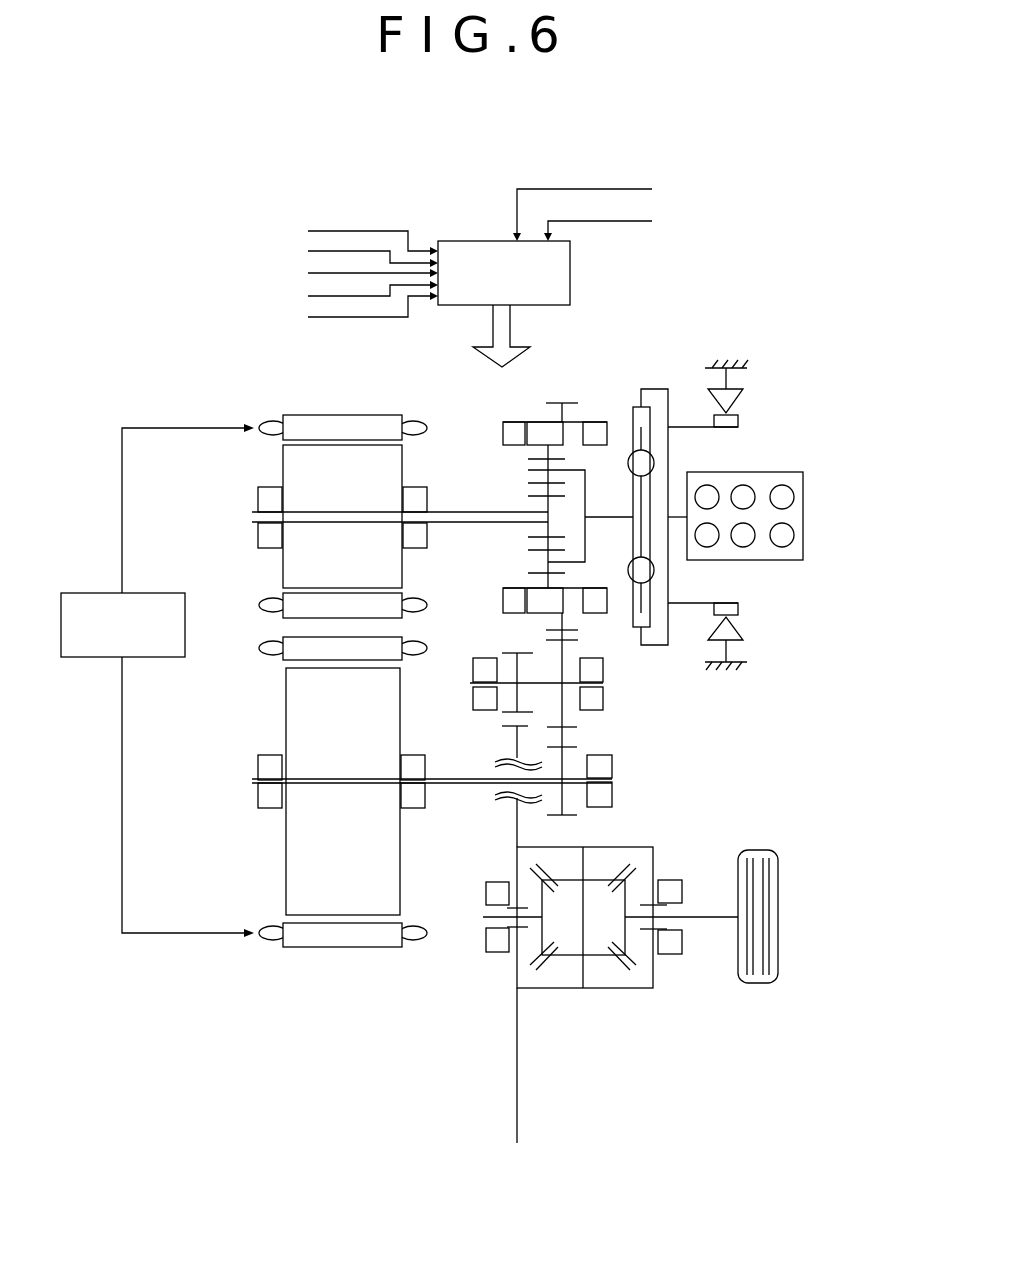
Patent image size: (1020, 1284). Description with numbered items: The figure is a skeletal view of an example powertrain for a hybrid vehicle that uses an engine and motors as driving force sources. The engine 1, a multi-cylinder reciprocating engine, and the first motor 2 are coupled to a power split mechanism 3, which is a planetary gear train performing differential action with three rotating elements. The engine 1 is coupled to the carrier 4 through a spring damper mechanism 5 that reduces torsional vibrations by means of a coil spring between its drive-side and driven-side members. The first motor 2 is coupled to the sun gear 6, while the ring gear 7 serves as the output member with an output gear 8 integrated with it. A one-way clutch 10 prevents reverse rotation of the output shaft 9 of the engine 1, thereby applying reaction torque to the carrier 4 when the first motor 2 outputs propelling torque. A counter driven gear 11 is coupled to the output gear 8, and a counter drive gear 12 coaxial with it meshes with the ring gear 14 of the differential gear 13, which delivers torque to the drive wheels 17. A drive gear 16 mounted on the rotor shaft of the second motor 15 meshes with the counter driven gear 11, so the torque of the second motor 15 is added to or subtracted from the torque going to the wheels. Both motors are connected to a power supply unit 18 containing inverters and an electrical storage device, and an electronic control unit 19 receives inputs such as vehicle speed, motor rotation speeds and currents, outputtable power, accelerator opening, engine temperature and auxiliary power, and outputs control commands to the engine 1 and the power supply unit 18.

The engine 1 is at (805, 515).
The first motor 2 is at (346, 412).
The power split mechanism 3 is at (597, 363).
The carrier 4 is at (584, 488).
The spring damper mechanism 5 is at (637, 408).
The sun gear 6 is at (534, 497).
The ring gear 7 is at (534, 450).
The output gear 8 is at (556, 402).
The output shaft 9 is at (673, 509).
The one-way clutch 10 is at (740, 405).
The counter driven gear 11 is at (577, 727).
The counter drive gear 12 is at (508, 650).
The differential gear 13 is at (640, 846).
The ring gear 14 is at (500, 731).
The second motor 15 is at (350, 950).
The drive gear 16 is at (577, 745).
The drive wheels 17 is at (763, 848).
The power supply unit 18 is at (98, 592).
The electronic control unit 19 is at (572, 268).